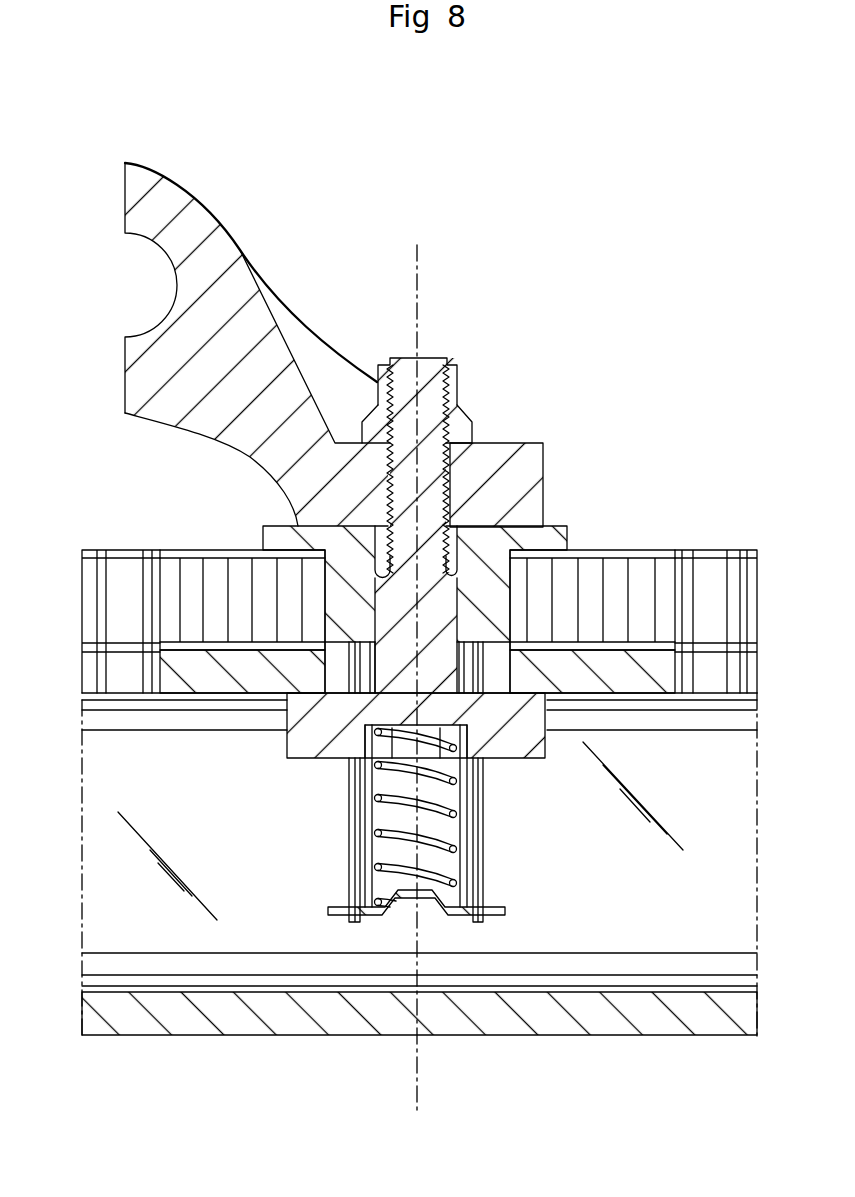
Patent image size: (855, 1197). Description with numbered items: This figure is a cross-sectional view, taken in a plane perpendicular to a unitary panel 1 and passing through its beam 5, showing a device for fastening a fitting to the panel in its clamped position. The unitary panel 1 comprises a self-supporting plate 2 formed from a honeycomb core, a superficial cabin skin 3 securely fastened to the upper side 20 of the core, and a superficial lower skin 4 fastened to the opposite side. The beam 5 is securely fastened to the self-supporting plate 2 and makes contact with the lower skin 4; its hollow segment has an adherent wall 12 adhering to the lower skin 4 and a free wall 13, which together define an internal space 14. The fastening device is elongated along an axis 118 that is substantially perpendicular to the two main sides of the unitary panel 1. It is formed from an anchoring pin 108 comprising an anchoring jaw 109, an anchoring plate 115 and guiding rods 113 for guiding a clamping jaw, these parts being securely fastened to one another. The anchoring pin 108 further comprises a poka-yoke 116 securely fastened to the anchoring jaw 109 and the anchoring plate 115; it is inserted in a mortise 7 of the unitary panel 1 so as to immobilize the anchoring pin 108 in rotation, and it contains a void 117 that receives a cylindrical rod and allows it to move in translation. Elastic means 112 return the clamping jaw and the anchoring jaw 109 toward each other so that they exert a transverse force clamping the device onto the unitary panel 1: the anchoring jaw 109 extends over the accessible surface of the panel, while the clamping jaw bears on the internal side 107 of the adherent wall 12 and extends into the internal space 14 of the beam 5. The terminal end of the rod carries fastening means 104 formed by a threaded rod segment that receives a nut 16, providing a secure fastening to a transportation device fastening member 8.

The unitary panel 1 is at (695, 514).
The self-supporting plate 2 is at (213, 597).
The cabin skin 3 is at (675, 551).
The lower skin 4 is at (198, 645).
The beam 5 is at (48, 655).
The mortise 7 is at (96, 600).
The transportation device fastening member 8 is at (204, 208).
The adherent wall 12 is at (258, 668).
The free wall 13 is at (210, 1018).
The internal space 14 is at (158, 927).
The nut 16 is at (460, 383).
The upper side 20 is at (650, 545).
The fastening means 104 is at (430, 348).
The internal side 107 is at (623, 673).
The anchoring pin 108 is at (690, 352).
The anchoring jaw 109 is at (557, 527).
The elastic means 112 is at (405, 800).
The guiding rods 113 is at (360, 807).
The anchoring plate 115 is at (487, 917).
The poka-yoke 116 is at (490, 527).
The void 117 is at (465, 500).
The axis of elongation 118 is at (424, 1086).